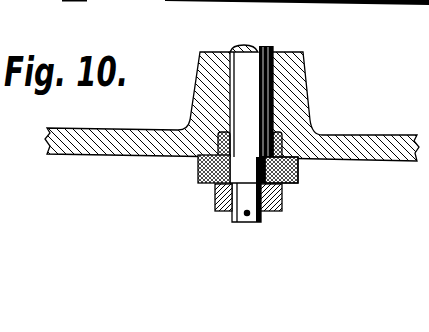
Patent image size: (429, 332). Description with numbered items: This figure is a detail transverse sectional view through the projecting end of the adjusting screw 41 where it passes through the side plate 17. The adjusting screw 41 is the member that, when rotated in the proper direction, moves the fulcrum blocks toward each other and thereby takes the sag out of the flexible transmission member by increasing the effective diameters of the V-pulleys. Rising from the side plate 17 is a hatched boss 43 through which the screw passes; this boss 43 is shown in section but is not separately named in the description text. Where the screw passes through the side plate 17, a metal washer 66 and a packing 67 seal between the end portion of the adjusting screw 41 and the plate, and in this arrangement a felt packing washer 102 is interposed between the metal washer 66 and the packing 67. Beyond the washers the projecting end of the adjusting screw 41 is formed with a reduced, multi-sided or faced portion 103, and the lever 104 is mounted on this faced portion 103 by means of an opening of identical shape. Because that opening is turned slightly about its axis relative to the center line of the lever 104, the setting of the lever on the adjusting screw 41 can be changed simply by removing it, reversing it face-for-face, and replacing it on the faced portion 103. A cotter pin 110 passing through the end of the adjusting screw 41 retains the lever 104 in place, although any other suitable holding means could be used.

The side plate 17 is at (135, 112).
The adjusting screw 41 is at (273, 46).
The hub boss 43 is at (308, 72).
The packing 67 is at (277, 143).
The felt packing washer 102 is at (198, 170).
The washer 66 is at (297, 183).
The lever 104 is at (216, 198).
The reduced multi-sided or faced portion 103 is at (266, 221).
The cotter pin 110 is at (245, 219).